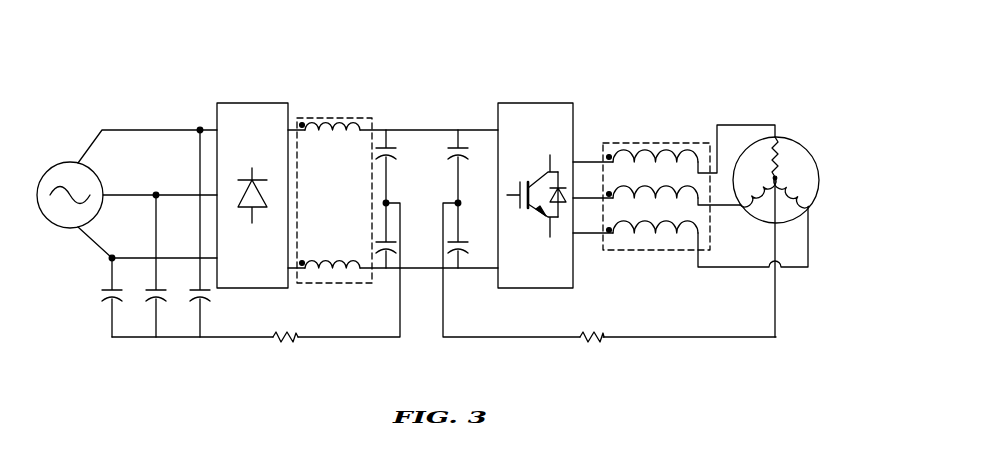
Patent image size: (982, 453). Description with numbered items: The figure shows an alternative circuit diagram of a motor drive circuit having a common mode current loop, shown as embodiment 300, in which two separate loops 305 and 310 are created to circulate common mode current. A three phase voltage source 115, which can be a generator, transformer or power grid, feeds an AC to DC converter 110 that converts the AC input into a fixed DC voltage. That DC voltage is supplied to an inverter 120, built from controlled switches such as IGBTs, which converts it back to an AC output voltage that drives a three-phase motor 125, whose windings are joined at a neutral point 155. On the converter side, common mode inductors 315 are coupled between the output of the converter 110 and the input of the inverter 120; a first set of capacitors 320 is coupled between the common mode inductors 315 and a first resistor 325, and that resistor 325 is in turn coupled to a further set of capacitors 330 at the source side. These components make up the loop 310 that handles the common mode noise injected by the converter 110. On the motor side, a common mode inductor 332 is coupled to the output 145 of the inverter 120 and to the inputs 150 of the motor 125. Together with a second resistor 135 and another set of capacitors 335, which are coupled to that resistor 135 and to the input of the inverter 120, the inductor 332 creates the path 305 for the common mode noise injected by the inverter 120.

The embodiment 300 is at (757, 45).
The AC to DC converter 110 is at (252, 103).
The three phase voltage source 115 is at (68, 163).
The inverter 120 is at (536, 103).
The motor 125 is at (810, 155).
The resistor Rc1 135 is at (601, 340).
The output of inverter 145 is at (575, 160).
The inputs of motor 150 is at (777, 139).
The neutral point 155 is at (774, 177).
The path 305 is at (669, 335).
The loop 310 is at (357, 333).
The common mode inductors Lc2 315 is at (343, 118).
The capacitors Cc2 320 is at (387, 141).
The resistor Rc2 325 is at (298, 339).
The capacitors Cc3 330 is at (88, 305).
The inductor Lc1 332 is at (661, 144).
The capacitors Cc1 335 is at (459, 141).